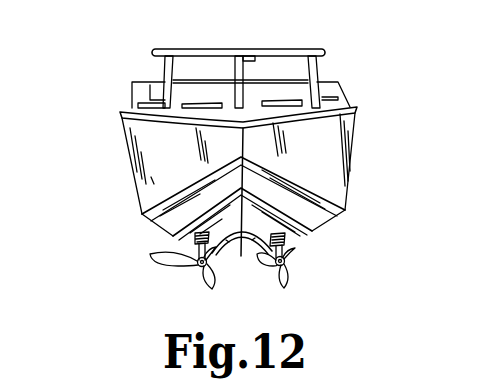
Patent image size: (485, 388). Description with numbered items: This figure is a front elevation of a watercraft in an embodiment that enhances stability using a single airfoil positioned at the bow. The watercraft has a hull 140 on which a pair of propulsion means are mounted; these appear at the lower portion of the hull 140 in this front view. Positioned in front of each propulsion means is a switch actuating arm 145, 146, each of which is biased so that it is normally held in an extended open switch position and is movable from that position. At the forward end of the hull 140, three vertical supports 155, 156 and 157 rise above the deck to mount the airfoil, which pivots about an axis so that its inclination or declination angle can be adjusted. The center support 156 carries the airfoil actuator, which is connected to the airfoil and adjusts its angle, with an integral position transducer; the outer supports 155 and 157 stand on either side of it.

The hull 140 is at (375, 146).
The switch actuating arm 145 is at (183, 251).
The switch actuating arm 146 is at (290, 253).
The vertical support 155 is at (163, 61).
The center support 156 is at (233, 70).
The vertical support 157 is at (320, 72).